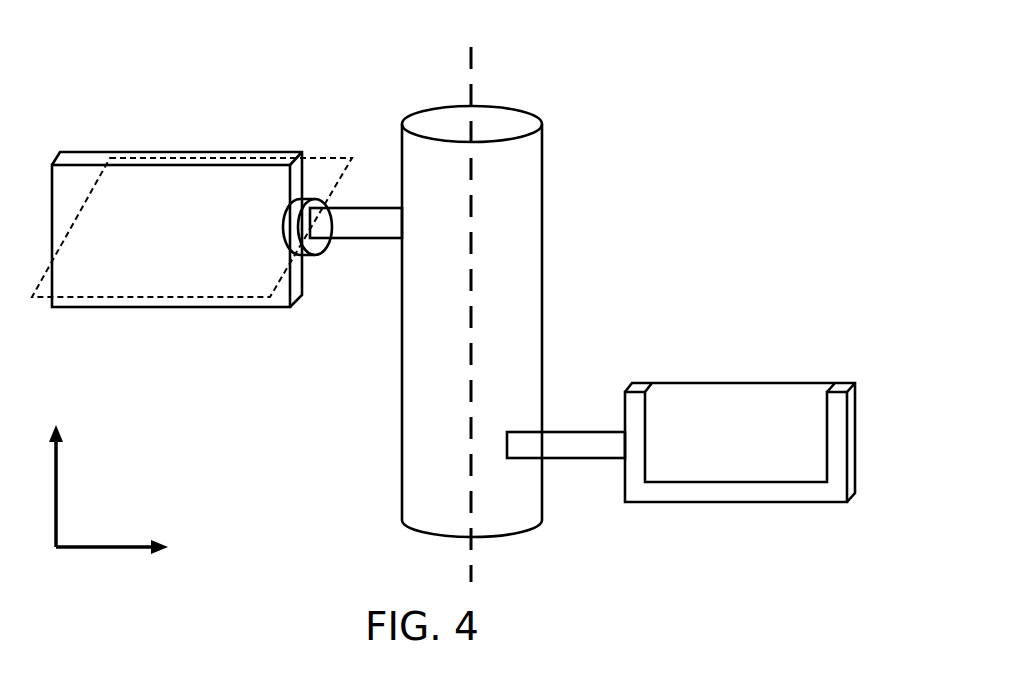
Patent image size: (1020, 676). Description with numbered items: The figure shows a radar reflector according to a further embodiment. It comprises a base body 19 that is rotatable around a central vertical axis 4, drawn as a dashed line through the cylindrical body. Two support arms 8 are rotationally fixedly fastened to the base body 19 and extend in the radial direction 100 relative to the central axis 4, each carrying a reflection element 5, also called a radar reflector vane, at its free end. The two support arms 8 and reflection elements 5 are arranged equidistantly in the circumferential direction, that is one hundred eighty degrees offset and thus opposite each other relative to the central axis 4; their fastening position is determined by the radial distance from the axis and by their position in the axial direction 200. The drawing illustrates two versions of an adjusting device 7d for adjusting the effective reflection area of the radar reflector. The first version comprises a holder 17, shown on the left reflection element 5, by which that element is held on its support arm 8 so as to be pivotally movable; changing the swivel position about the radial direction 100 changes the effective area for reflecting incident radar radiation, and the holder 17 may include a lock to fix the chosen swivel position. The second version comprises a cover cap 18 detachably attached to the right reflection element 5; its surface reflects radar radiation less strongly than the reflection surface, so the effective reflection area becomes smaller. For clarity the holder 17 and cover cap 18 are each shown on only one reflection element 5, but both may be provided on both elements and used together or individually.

The central vertical axis 4 is at (473, 68).
The base body 19 is at (518, 218).
The support arm 8 is at (357, 207).
The reflection element 5 is at (284, 308).
The holder 17 is at (323, 203).
The cover cap 18 is at (737, 425).
The adjusting device 7d is at (310, 260).
The axial direction 200 is at (57, 482).
The radial direction 100 is at (115, 552).